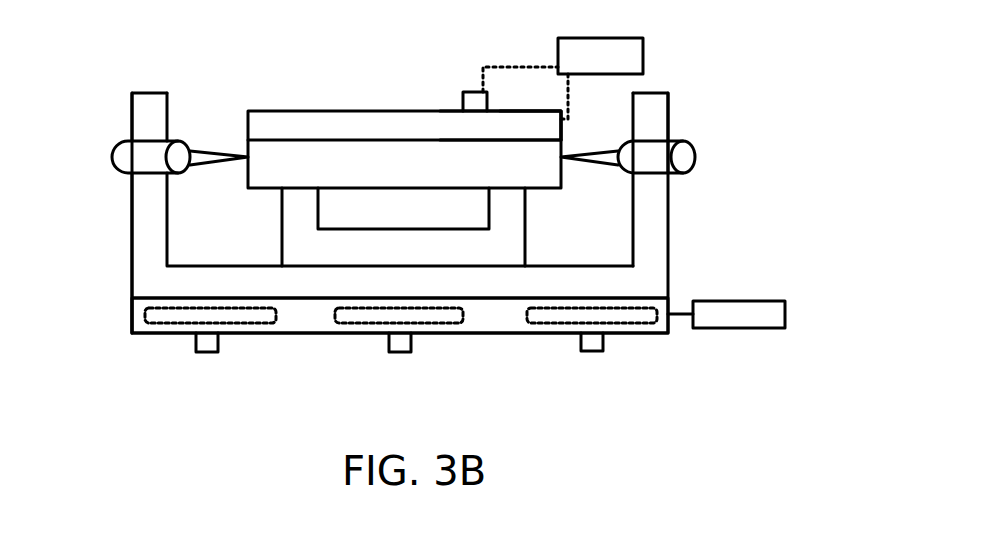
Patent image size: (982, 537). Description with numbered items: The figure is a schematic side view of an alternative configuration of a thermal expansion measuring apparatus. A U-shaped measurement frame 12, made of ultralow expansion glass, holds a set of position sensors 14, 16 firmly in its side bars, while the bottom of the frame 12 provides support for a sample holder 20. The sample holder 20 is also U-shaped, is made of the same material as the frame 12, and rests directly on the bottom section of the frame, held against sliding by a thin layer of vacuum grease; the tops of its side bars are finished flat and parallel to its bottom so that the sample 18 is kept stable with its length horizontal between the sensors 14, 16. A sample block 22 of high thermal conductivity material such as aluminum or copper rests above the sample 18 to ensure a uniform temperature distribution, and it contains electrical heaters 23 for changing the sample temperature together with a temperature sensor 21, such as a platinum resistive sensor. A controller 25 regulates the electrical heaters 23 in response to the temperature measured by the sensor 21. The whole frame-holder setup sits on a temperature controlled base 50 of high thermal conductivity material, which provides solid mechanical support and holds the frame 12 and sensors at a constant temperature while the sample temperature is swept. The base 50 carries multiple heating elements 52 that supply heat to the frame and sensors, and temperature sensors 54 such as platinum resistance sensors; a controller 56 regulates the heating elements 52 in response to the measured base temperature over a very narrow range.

The frame 12 is at (313, 286).
The position sensor 14 is at (120, 154).
The position sensor 16 is at (687, 153).
The sample 18 is at (315, 155).
The sample holder 20 is at (513, 241).
The temperature sensor 21 is at (466, 101).
The sample block 22 is at (507, 128).
The electrical heaters 23 is at (535, 120).
The controller 25 is at (634, 54).
The temperature controlled base 50 is at (660, 328).
The heating elements 52 is at (250, 322).
The temperature sensors 54 is at (208, 352).
The controller 56 is at (735, 305).